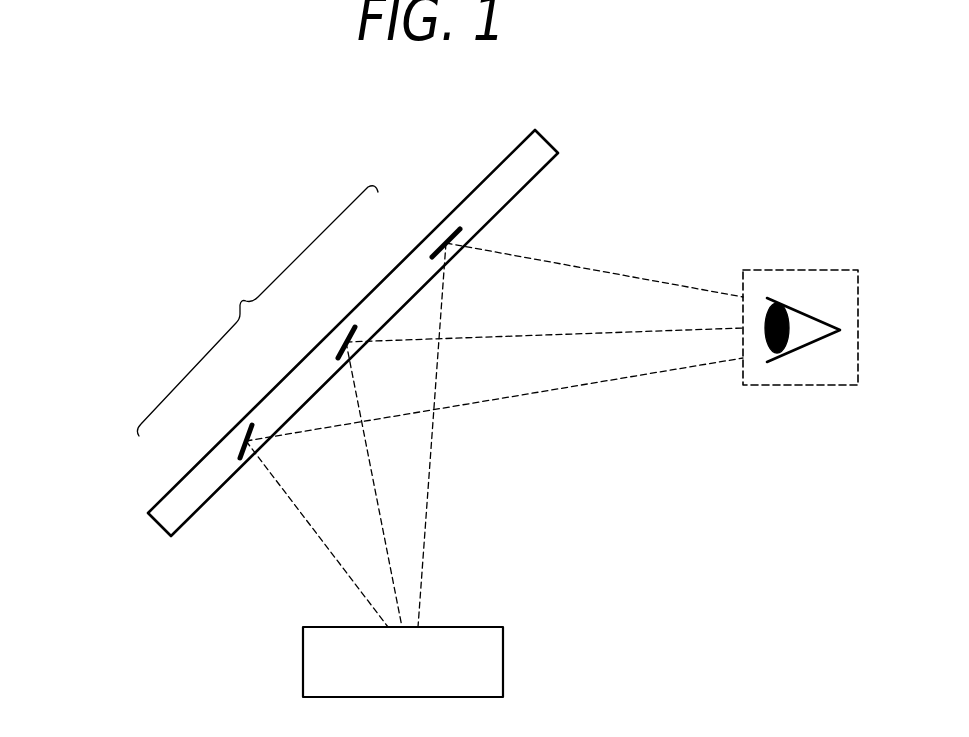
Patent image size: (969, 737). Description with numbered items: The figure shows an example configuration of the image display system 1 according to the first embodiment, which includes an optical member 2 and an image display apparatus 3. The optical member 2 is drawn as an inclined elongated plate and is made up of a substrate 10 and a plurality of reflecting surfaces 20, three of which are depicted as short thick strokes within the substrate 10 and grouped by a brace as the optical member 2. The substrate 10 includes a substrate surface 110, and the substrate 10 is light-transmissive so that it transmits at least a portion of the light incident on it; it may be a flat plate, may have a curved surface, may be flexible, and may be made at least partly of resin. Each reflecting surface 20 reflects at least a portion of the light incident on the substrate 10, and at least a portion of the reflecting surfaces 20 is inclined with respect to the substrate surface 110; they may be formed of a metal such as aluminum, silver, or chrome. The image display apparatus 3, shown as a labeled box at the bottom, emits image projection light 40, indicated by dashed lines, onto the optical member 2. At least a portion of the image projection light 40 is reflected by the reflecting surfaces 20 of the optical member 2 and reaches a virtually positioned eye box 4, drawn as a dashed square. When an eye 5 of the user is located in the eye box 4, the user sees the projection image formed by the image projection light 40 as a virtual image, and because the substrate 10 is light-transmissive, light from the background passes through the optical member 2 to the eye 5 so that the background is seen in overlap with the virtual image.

The image display system 1 is at (197, 140).
The substrate 10 is at (525, 155).
The substrate surface 110 is at (552, 177).
The optical member 2 is at (257, 311).
The reflecting surfaces 20 is at (440, 243).
The image projection light 40 is at (424, 506).
The eye box 4 is at (808, 270).
The eye 5 is at (797, 350).
The image display apparatus 3 is at (503, 657).